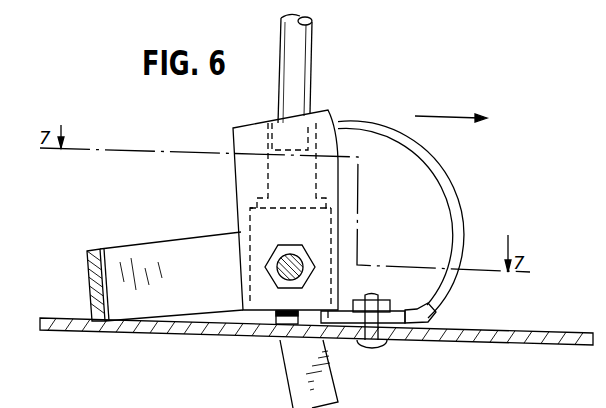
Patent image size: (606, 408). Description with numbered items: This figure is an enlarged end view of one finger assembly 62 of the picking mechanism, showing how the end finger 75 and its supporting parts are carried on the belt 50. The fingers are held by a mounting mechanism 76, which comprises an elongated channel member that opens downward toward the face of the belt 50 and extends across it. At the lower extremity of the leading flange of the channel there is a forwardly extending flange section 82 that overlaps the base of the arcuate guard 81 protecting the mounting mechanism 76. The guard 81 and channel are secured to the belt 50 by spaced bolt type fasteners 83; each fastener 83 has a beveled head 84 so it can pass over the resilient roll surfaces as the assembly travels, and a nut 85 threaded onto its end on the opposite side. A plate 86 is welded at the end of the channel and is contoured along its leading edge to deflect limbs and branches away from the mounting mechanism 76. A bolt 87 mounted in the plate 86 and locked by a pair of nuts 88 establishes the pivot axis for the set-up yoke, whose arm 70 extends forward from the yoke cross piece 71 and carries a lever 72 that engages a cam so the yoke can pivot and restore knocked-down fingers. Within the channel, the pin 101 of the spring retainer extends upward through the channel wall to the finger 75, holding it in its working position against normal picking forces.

The belt 50 is at (56, 322).
The finger assembly 62 is at (343, 227).
The arm of the yoke 70 is at (157, 247).
The yoke cross piece 71 is at (87, 270).
The lever 72 is at (288, 371).
The end finger 75 is at (311, 77).
The mounting mechanism 76 is at (342, 311).
The arcuate guard 81 is at (448, 179).
The flange section 82 is at (436, 313).
The bolt type fastener 83 is at (377, 297).
The head 84 is at (380, 347).
The nut 85 is at (390, 305).
The plate 86 is at (256, 180).
The bolt 87 is at (278, 270).
The nut 88 is at (265, 262).
The pin 101 is at (275, 315).